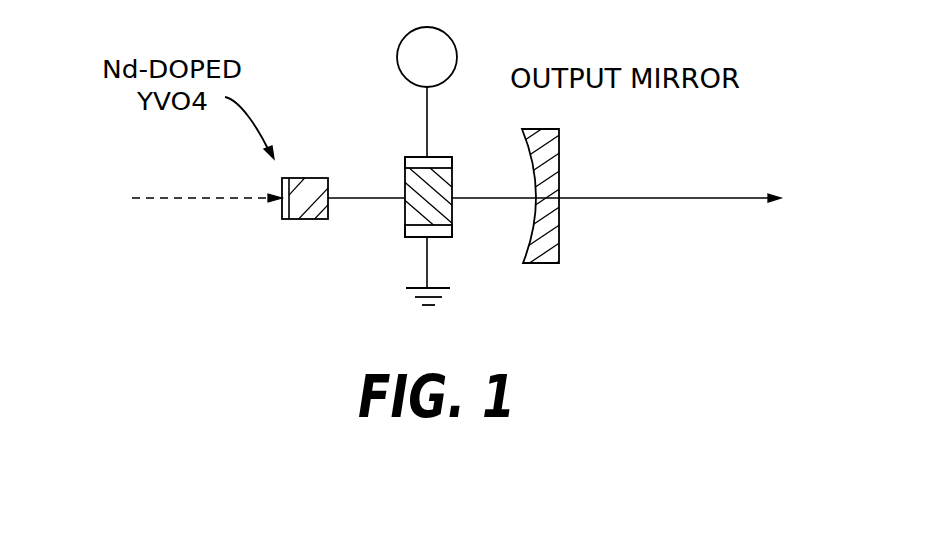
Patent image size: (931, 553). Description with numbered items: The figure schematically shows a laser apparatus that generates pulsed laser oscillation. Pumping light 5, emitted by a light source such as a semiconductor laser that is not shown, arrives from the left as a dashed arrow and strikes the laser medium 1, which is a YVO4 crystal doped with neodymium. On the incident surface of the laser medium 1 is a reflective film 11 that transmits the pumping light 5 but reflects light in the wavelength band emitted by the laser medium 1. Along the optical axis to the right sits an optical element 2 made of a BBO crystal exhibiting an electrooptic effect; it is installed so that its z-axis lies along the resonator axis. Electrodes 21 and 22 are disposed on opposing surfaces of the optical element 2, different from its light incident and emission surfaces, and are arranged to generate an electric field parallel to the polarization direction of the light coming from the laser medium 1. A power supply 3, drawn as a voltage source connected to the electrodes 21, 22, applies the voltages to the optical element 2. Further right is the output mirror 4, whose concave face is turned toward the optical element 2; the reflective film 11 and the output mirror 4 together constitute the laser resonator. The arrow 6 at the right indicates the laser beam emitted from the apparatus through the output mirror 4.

The laser medium 1 is at (300, 219).
The reflective film 11 is at (280, 219).
The optical element 2 is at (453, 180).
The electrode 21 is at (418, 157).
The electrode 22 is at (410, 237).
The power supply 3 is at (453, 34).
The output mirror 4 is at (538, 263).
The pumping light 5 is at (200, 200).
The emitted laser beam 6 is at (705, 196).